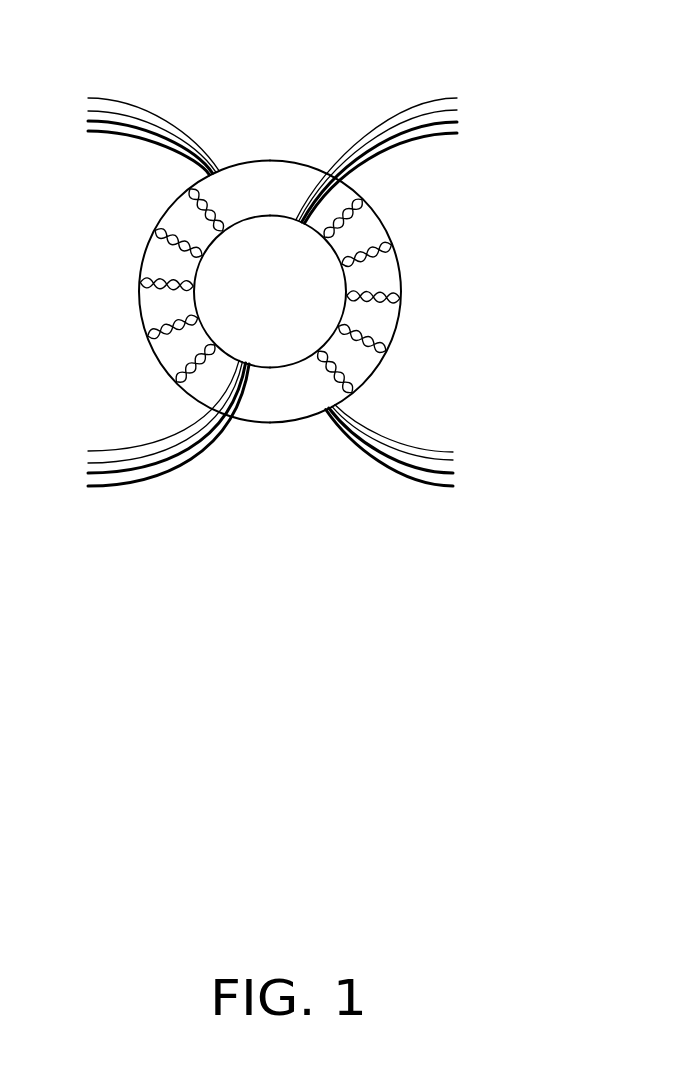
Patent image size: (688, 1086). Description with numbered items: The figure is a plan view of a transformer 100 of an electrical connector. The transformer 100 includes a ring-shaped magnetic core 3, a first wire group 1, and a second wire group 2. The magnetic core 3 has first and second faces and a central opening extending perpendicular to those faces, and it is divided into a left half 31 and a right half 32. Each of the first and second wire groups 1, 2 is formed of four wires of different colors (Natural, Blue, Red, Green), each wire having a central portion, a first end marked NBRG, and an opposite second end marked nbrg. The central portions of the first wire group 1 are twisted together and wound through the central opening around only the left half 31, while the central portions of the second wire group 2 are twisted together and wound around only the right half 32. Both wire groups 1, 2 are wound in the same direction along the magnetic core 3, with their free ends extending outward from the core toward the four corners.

The transformer 100 is at (356, 62).
The first wire group 1 is at (155, 235).
The second wire group 2 is at (342, 216).
The magnetic core 3 is at (270, 183).
The left half 31 is at (165, 260).
The right half 32 is at (375, 275).